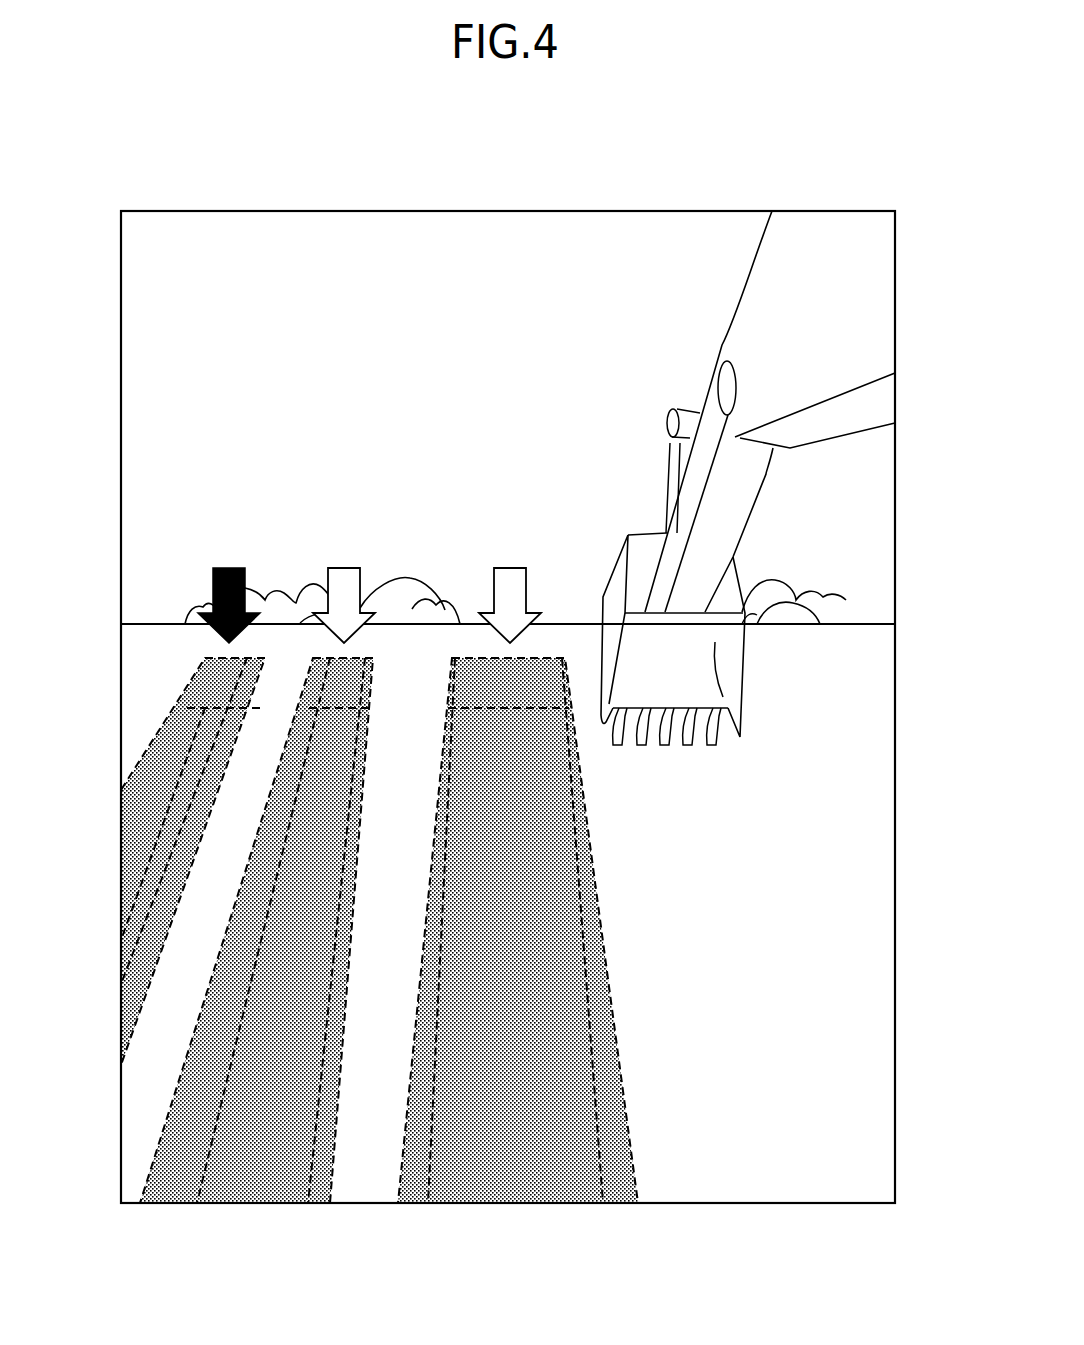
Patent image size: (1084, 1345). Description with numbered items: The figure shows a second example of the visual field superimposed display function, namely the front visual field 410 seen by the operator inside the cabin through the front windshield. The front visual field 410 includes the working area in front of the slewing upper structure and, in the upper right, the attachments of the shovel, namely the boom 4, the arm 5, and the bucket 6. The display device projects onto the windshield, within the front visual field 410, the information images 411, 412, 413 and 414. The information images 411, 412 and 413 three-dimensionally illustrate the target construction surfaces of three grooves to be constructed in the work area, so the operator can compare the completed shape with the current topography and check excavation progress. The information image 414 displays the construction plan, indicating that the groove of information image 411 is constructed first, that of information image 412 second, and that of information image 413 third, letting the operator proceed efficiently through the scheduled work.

The front visual field 410 is at (45, 173).
The boom 4 is at (771, 450).
The arm 5 is at (693, 493).
The bucket 6 is at (728, 660).
The information image 411 is at (136, 870).
The information image 412 is at (256, 1102).
The information image 413 is at (516, 1103).
The information image 414 is at (211, 524).